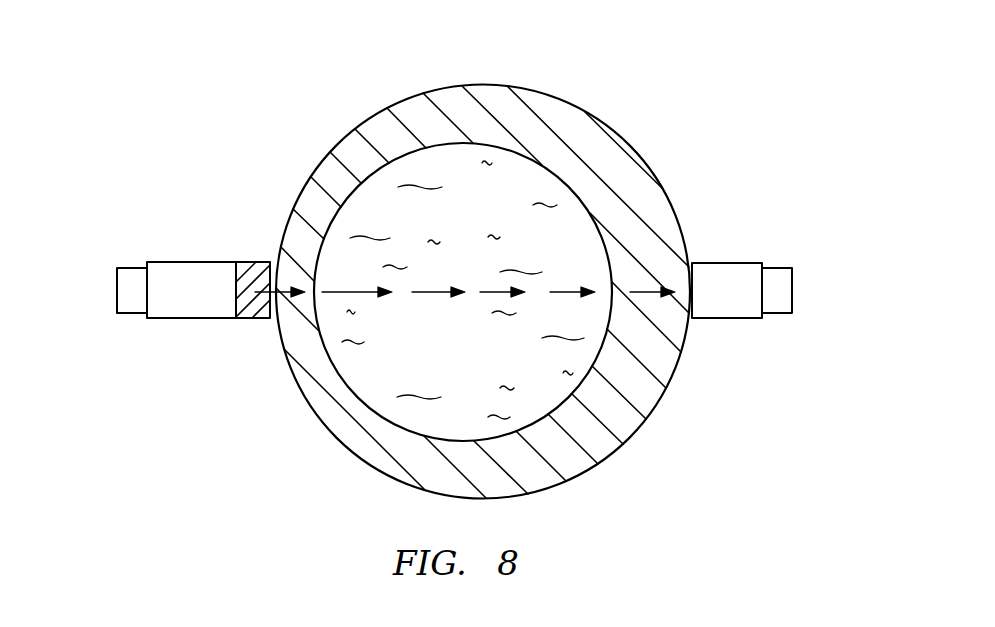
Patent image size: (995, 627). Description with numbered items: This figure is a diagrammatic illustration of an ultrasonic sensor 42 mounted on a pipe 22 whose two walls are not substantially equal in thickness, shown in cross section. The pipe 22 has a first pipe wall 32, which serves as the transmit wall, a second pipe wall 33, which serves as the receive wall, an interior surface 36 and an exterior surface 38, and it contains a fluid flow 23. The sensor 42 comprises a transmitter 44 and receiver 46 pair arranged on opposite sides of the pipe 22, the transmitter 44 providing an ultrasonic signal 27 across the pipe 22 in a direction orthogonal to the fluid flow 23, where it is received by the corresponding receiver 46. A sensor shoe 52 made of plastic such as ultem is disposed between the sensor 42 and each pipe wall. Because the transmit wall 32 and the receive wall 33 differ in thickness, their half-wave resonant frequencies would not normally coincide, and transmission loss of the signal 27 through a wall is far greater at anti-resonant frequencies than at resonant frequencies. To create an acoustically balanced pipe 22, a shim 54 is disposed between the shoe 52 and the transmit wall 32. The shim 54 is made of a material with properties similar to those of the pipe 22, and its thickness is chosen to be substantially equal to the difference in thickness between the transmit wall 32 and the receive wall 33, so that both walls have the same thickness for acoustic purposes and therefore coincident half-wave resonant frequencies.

The pipe 22 is at (474, 263).
The fluid flow 23 is at (497, 358).
The signal 27 is at (428, 296).
The first pipe wall 32 is at (291, 311).
The second pipe wall 33 is at (648, 259).
The interior surface 36 is at (456, 146).
The exterior surface 38 is at (536, 88).
The ultrasonic sensor 42 is at (400, 284).
The transmitter 44 is at (128, 301).
The receiver 46 is at (778, 288).
The sensor shoe 52 is at (175, 280).
The shim 54 is at (251, 270).